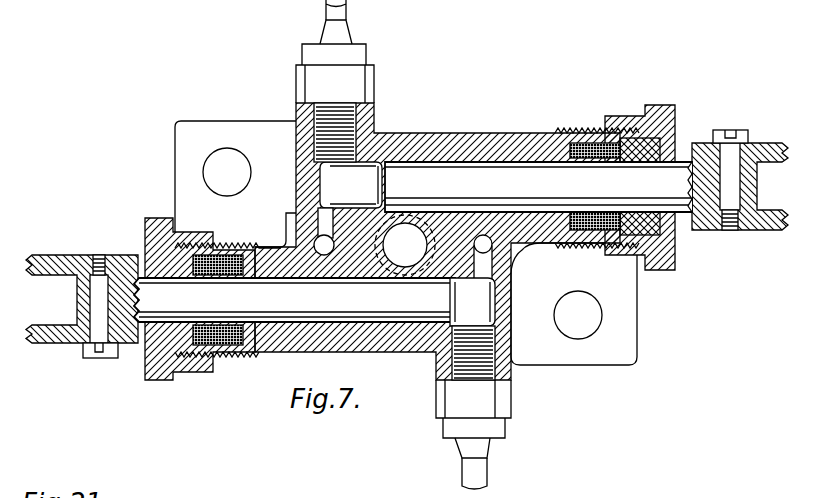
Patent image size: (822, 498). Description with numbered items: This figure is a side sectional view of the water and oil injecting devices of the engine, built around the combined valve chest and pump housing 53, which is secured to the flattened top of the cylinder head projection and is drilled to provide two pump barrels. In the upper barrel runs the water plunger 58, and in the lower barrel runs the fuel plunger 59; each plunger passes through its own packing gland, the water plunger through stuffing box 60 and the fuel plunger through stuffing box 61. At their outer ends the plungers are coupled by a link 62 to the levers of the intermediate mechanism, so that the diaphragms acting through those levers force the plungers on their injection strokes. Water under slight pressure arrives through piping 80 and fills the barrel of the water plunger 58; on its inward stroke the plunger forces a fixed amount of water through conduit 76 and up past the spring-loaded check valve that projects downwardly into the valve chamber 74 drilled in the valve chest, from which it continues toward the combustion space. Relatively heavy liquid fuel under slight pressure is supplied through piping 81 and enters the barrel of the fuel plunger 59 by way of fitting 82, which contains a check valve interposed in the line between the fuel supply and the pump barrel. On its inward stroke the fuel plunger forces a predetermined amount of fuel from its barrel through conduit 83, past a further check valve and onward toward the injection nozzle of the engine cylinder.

The combined valve chest and pump housing 53 is at (446, 143).
The water plunger 58 is at (488, 177).
The fuel plunger 59 is at (297, 300).
The stuffing box 60 is at (609, 143).
The stuffing box 61 is at (229, 347).
The link 62 is at (52, 345).
The valve chamber 74 is at (318, 244).
The conduit 76 is at (343, 92).
The piping 80 is at (348, 6).
The piping 81 is at (486, 470).
The fitting 82 is at (458, 405).
The conduit 83 is at (488, 246).